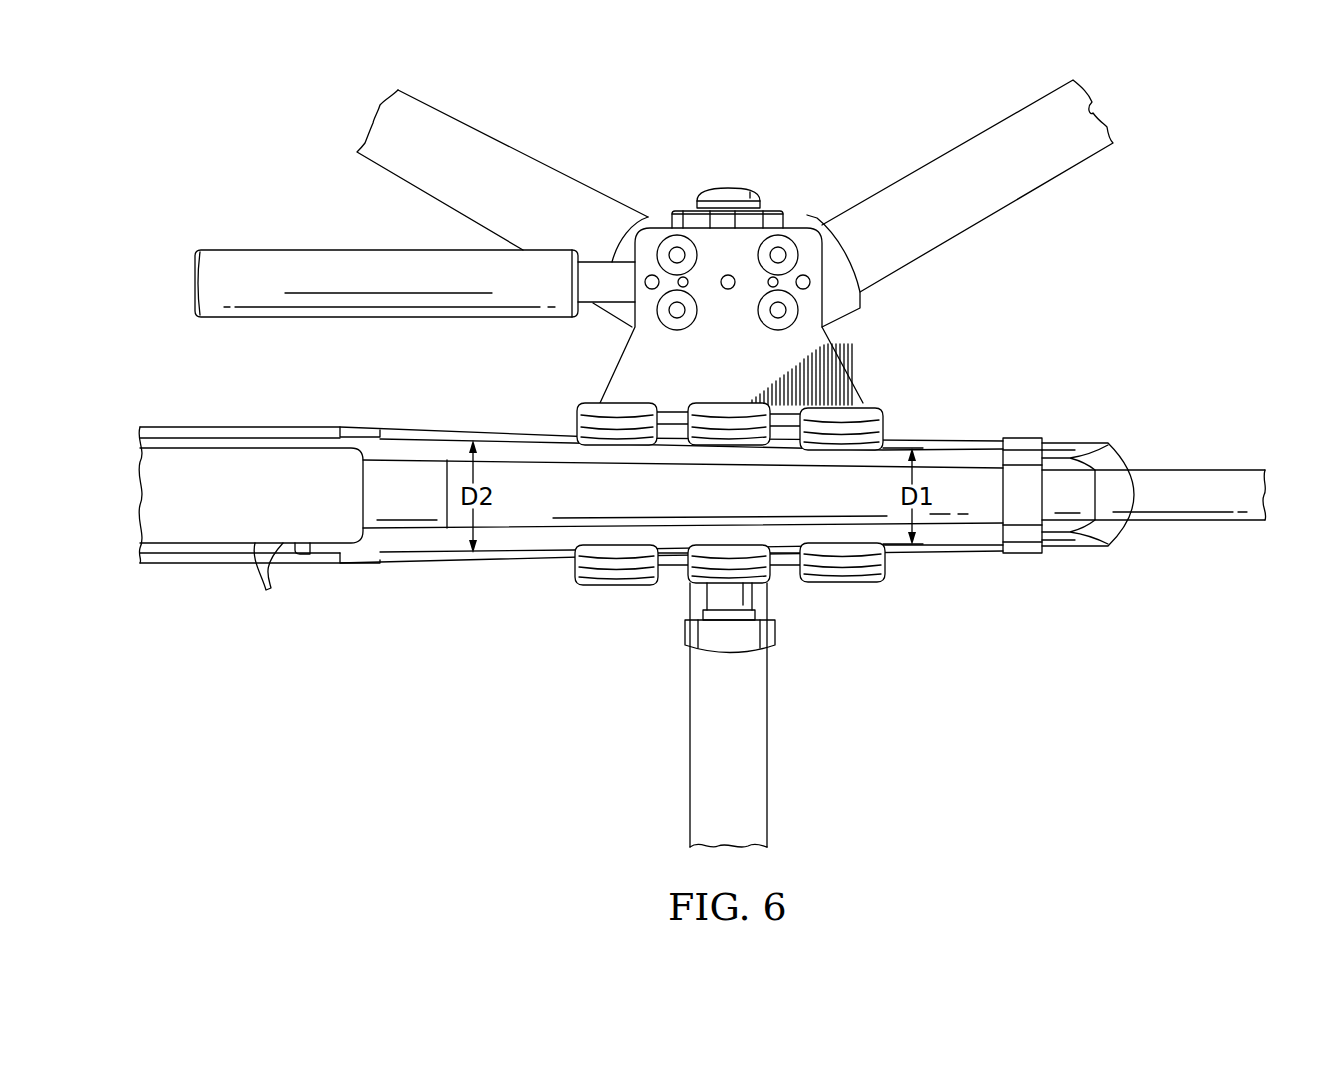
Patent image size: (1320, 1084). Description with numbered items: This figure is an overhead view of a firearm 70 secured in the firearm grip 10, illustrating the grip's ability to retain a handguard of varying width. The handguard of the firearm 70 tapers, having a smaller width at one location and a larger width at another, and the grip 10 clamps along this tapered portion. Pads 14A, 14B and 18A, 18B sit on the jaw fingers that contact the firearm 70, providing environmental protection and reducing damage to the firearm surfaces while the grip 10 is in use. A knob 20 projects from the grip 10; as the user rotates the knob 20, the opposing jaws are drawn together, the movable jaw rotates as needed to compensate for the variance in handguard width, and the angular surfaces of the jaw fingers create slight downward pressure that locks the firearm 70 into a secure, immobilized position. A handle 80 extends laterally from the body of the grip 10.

The grip 10 is at (890, 333).
The handle 80 is at (502, 160).
The pad 18A is at (870, 417).
The upper roller 18B is at (614, 413).
The pad 14A is at (848, 574).
The lower roller 14B is at (617, 582).
The knob 20 is at (728, 638).
The firearm 70 is at (1074, 544).